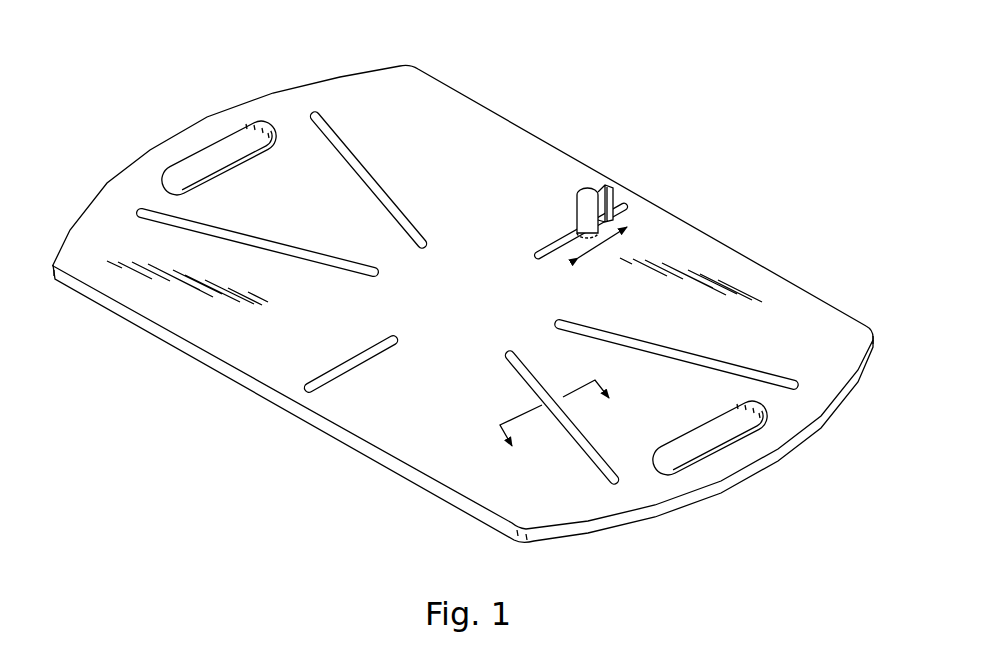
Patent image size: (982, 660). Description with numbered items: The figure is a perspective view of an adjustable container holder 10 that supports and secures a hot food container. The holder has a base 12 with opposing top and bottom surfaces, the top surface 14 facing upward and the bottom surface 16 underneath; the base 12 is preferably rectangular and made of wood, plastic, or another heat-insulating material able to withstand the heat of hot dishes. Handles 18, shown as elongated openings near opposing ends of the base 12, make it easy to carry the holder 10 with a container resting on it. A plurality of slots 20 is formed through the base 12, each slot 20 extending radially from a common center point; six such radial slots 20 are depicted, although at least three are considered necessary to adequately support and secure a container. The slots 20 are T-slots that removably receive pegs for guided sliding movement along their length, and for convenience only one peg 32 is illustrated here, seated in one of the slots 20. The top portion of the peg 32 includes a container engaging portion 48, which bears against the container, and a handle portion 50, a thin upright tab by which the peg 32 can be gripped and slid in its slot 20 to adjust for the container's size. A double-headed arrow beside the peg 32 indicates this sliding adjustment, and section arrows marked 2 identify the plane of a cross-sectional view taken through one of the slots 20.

The adjustable container holder 10 is at (486, 88).
The base 12 is at (536, 135).
The top surface 14 is at (494, 305).
The bottom surface 16 is at (337, 442).
The handles 18 is at (190, 132).
The slots 20 is at (357, 158).
The peg 32 is at (585, 188).
The container engaging portion 48 is at (576, 211).
The handle portion 50 is at (612, 195).
The section line 2 is at (563, 429).